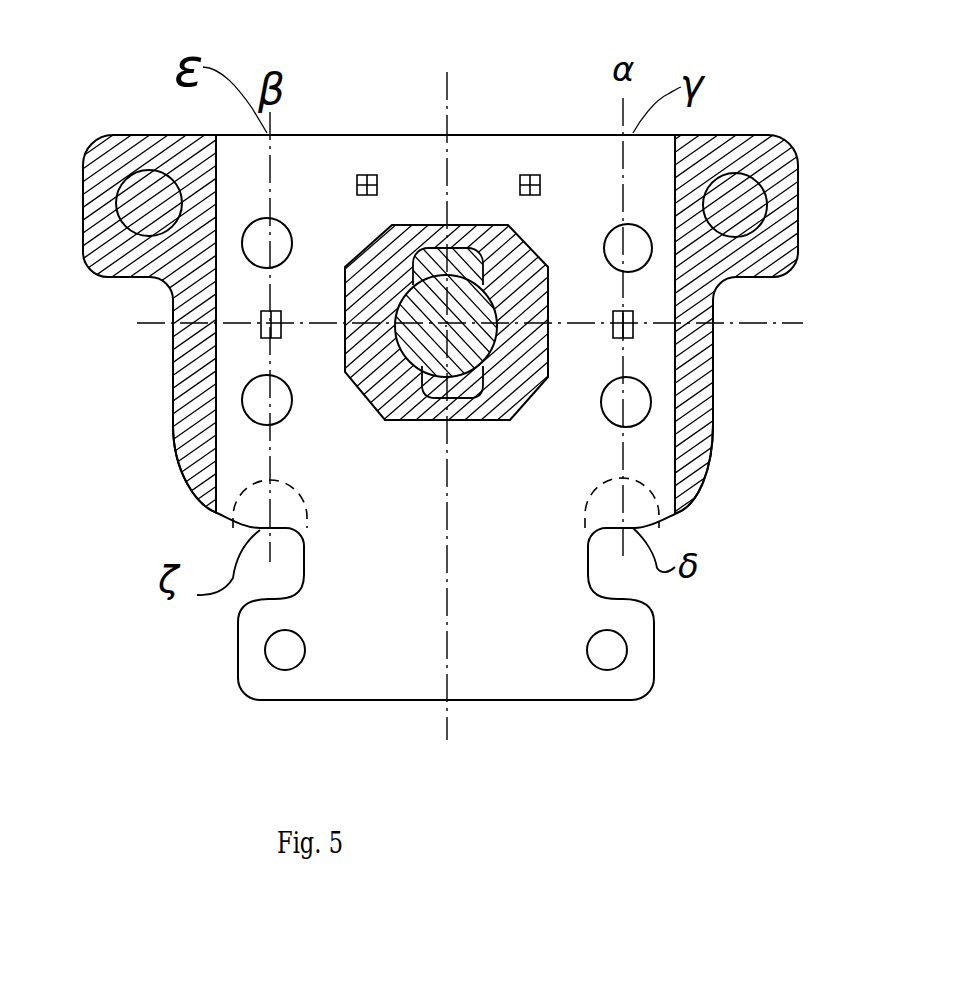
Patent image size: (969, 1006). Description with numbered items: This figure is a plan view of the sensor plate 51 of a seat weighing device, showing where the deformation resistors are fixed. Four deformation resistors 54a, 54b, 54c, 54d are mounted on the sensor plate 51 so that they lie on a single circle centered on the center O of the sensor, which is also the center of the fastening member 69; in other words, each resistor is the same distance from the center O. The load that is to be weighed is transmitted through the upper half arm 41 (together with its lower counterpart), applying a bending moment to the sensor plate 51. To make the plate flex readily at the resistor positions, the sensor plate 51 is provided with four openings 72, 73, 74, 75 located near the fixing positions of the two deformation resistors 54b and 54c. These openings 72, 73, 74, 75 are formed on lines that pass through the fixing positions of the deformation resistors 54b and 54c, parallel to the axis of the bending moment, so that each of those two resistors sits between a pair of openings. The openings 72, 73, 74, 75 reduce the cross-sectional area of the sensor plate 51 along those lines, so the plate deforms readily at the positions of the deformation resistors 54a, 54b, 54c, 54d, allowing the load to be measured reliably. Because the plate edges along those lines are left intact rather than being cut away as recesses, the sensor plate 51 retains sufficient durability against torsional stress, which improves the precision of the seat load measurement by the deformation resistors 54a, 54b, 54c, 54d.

The sensor plate 51 is at (490, 135).
The upper half arm 41 is at (175, 422).
The fastening member 69 is at (432, 352).
The opening 72 is at (611, 231).
The opening 73 is at (609, 417).
The opening 74 is at (286, 418).
The opening 75 is at (285, 225).
The deformation resistor 54a is at (541, 175).
The deformation resistor 54b is at (634, 332).
The deformation resistor 54c is at (261, 313).
The deformation resistor 54d is at (367, 175).
The center of the sensor O is at (455, 320).